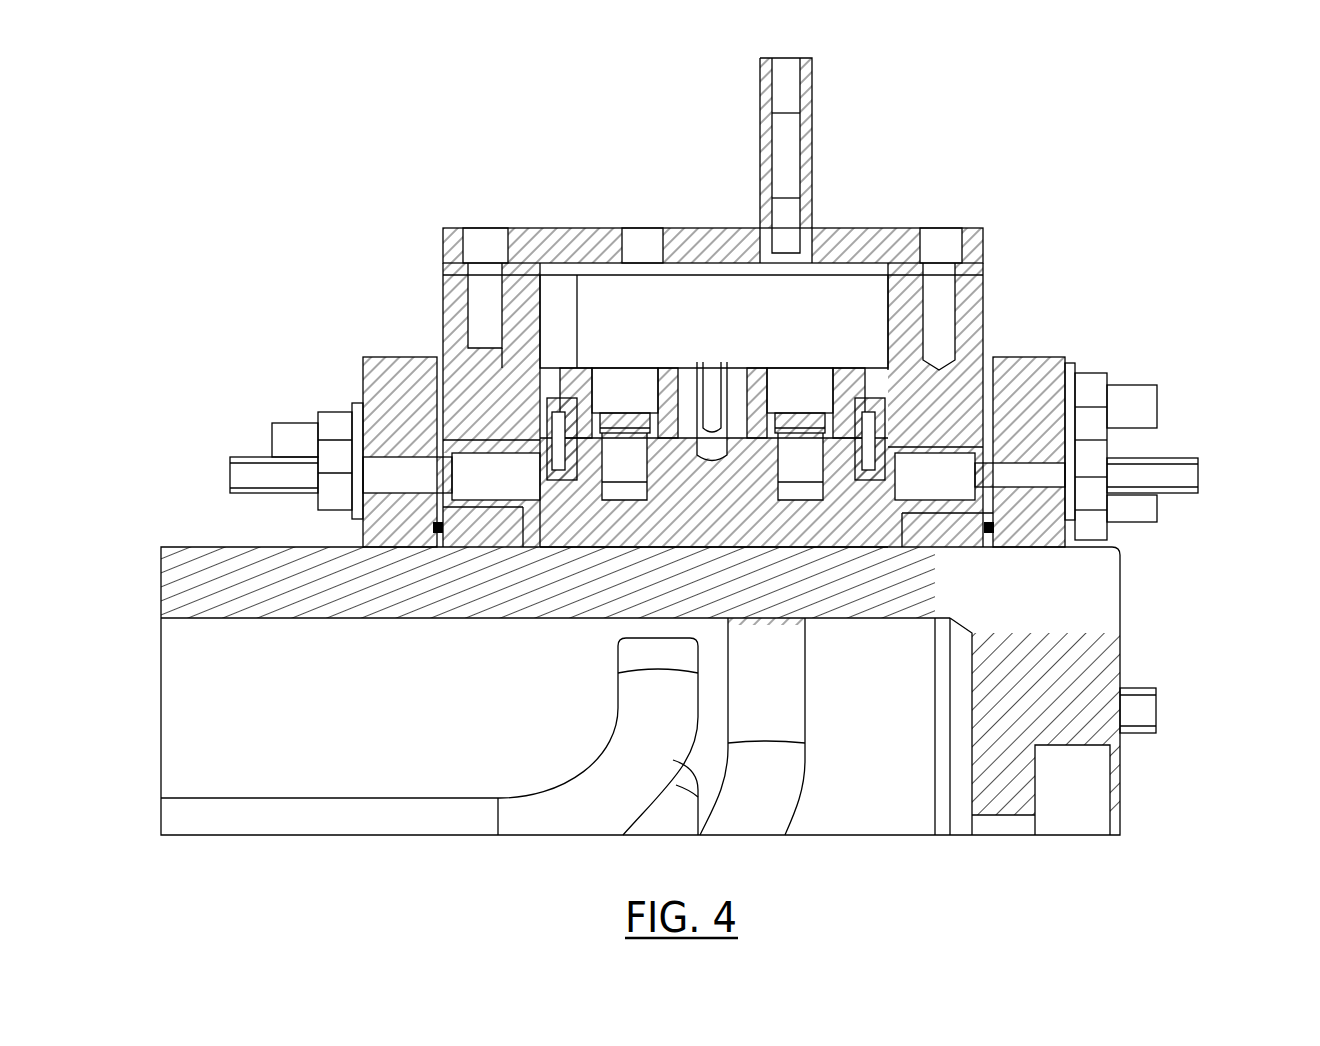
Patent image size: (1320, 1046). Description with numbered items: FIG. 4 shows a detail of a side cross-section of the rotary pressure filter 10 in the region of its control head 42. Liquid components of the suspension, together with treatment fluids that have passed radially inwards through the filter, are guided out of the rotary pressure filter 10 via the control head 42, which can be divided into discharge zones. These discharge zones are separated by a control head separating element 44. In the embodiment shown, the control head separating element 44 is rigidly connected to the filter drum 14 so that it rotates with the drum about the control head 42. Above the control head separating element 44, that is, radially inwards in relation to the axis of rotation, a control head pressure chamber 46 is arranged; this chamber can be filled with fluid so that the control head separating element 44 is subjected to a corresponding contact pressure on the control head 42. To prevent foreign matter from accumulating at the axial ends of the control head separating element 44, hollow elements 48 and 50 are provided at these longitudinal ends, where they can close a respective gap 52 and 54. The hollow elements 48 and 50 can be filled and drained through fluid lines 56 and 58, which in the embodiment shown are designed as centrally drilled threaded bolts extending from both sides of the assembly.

The rotary pressure filter 10 is at (277, 151).
The filter drum 14 is at (968, 329).
The control head 42 is at (217, 590).
The control head separating element 44 is at (748, 487).
The control head pressure chamber 46 is at (823, 306).
The hollow element 48 is at (475, 468).
The hollow element 50 is at (944, 475).
The gap 52 is at (540, 488).
The gap 54 is at (885, 490).
The fluid line 56 is at (276, 472).
The fluid line 58 is at (1160, 478).